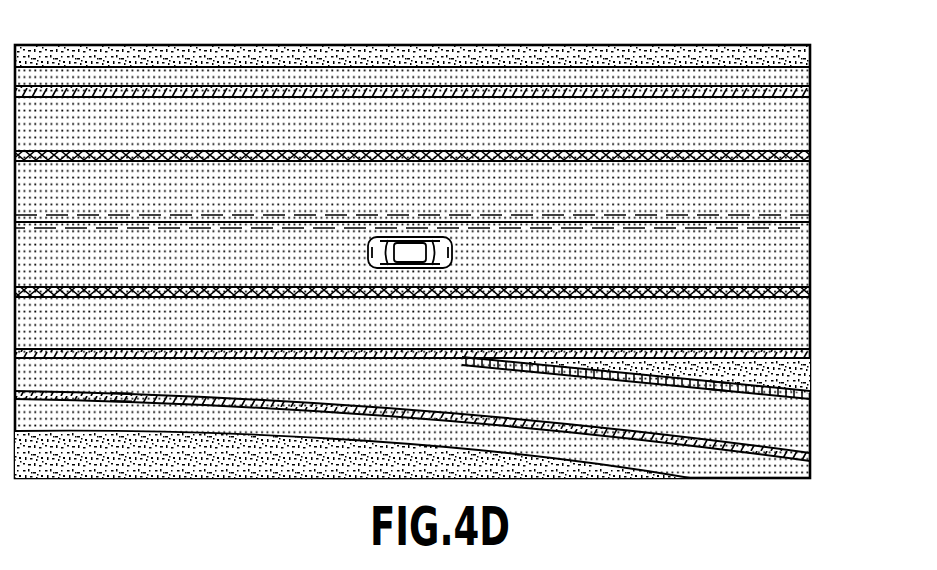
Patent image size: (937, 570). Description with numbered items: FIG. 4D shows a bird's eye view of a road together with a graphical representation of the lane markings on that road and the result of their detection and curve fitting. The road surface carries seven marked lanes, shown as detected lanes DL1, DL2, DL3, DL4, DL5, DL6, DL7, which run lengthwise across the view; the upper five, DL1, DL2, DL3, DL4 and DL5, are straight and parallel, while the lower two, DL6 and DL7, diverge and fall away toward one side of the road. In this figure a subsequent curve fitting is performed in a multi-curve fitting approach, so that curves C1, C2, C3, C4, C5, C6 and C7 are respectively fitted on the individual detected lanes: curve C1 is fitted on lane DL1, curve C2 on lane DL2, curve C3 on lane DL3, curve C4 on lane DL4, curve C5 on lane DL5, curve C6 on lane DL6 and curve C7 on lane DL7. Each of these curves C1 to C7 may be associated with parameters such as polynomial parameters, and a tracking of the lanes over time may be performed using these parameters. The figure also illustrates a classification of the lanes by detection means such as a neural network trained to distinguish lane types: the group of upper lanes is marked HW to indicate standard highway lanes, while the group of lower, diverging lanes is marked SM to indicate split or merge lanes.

The curve C1 is at (653, 88).
The curve C2 is at (710, 157).
The curve C3 is at (762, 222).
The curve C4 is at (785, 294).
The curve C5 is at (45, 355).
The curve C6 is at (717, 385).
The curve C7 is at (117, 393).
The detected lane DL1 is at (800, 90).
The detected lane DL2 is at (800, 158).
The detected lane DL3 is at (800, 222).
The detected lane DL4 is at (800, 288).
The detected lane DL5 is at (800, 356).
The detected lane DL6 is at (791, 396).
The detected lane DL7 is at (795, 462).
The standard highway lanes HW is at (875, 57).
The split or merge lanes SM is at (876, 383).